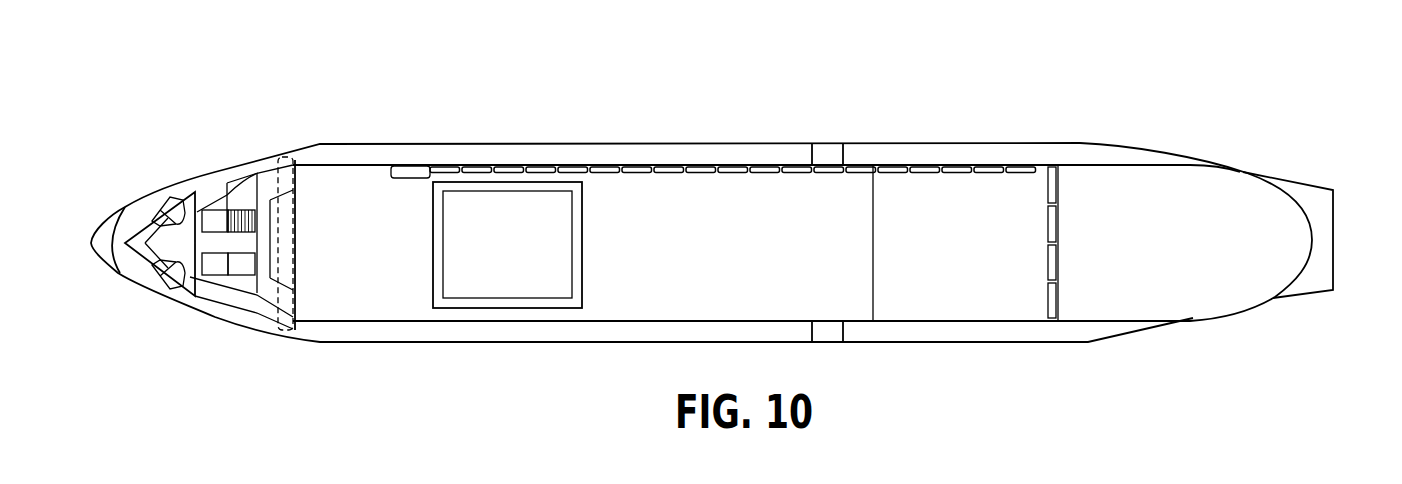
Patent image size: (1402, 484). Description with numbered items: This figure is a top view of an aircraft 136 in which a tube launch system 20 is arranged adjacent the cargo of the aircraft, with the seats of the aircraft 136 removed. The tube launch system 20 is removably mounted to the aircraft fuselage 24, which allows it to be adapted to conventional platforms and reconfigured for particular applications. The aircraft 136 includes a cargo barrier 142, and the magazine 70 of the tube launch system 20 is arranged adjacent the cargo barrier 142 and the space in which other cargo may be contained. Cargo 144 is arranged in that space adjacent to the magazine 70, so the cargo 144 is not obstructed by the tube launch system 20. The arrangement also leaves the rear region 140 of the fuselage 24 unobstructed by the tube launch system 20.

The aircraft 136 is at (171, 132).
The cargo barrier 142 is at (289, 172).
The magazine 70 is at (407, 168).
The cargo 144 is at (507, 230).
The tube launch system 20 is at (593, 165).
The aircraft fuselage 24 is at (773, 143).
The rear region 140 is at (1184, 197).